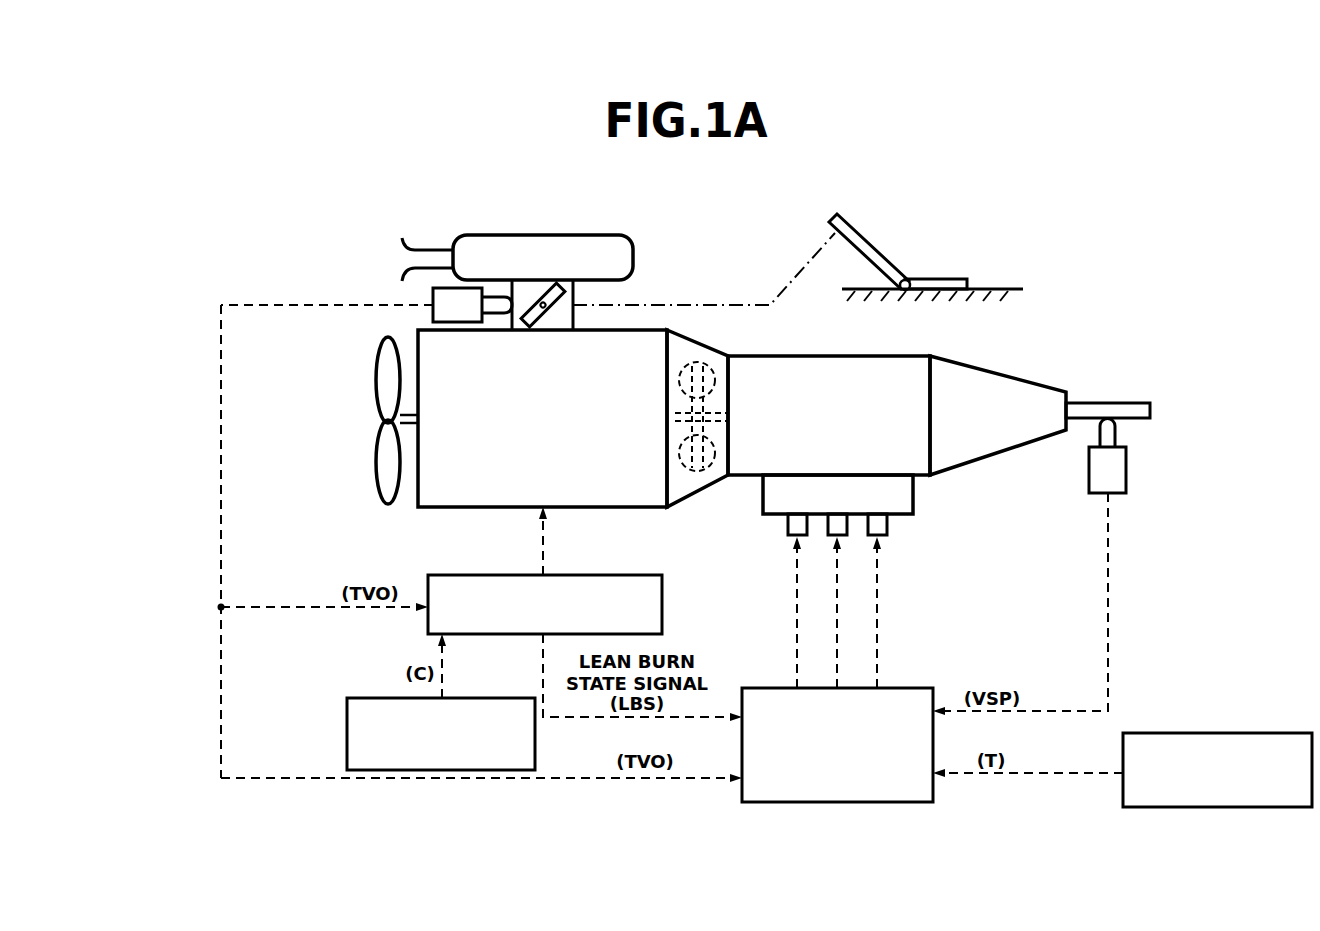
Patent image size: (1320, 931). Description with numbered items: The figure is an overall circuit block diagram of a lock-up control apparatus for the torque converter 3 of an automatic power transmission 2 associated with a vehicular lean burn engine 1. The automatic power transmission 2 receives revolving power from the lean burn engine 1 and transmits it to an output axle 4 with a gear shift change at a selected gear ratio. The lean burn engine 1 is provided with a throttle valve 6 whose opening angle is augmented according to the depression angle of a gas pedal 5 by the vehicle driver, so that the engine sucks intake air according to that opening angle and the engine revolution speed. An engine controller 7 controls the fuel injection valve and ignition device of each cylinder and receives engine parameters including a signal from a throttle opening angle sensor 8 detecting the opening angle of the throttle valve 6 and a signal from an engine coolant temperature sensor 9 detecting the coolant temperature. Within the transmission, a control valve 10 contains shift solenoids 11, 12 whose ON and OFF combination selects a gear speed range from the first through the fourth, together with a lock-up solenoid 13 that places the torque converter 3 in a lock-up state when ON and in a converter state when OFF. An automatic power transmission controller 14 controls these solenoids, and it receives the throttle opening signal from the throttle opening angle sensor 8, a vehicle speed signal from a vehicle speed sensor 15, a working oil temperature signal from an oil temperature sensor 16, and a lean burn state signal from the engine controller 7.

The lean burn engine 1 is at (592, 507).
The automatic power transmission 2 is at (875, 357).
The torque converter 3 is at (713, 373).
The output axle 4 is at (1112, 403).
The gas pedal (accelerator pedal) 5 is at (873, 243).
The throttle valve 6 is at (573, 298).
The engine controller 7 is at (653, 575).
The throttle opening angle sensor 8 is at (433, 293).
The engine coolant temperature sensor 9 is at (347, 735).
The control valve 10 is at (914, 493).
The shift solenoid 11 is at (832, 538).
The shift solenoid 12 is at (888, 522).
The lock-up solenoid 13 is at (786, 526).
The automatic power transmission controller 14 is at (912, 688).
The vehicle speed sensor 15 is at (1127, 468).
The oil temperature sensor 16 is at (1243, 733).